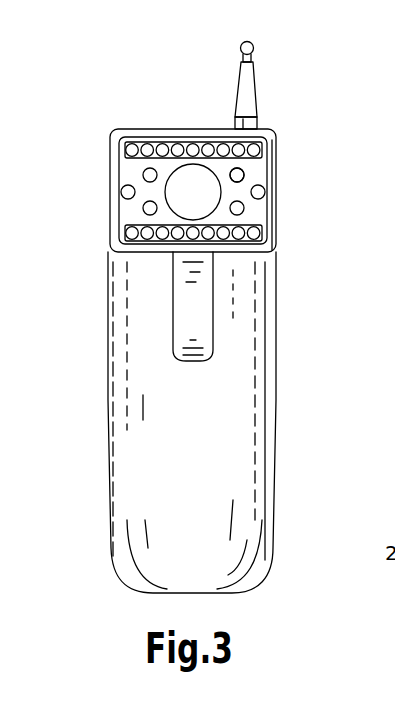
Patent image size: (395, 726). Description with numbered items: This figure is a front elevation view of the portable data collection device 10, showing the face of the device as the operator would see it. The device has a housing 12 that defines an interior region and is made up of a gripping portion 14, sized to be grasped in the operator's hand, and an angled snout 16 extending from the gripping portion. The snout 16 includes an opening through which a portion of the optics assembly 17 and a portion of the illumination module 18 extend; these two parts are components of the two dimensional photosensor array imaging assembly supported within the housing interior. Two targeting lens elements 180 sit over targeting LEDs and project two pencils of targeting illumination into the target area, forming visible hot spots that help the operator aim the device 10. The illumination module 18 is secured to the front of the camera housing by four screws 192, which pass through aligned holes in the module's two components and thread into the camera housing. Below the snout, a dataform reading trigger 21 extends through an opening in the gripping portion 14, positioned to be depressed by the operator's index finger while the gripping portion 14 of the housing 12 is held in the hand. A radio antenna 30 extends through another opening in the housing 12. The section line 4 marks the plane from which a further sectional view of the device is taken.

The section line 4- 4 is at (195, 28).
The portable data collection device 10 is at (303, 333).
The housing 12 is at (299, 225).
The gripping portion 14 is at (249, 400).
The angled snout 16 is at (112, 129).
The optics assembly 17 is at (172, 191).
The illumination module 18 is at (254, 172).
The dataform reading trigger 21 is at (186, 319).
The radio antenna 30 is at (253, 108).
The targeting lens elements 180 is at (121, 193).
The screws 192 is at (143, 174).